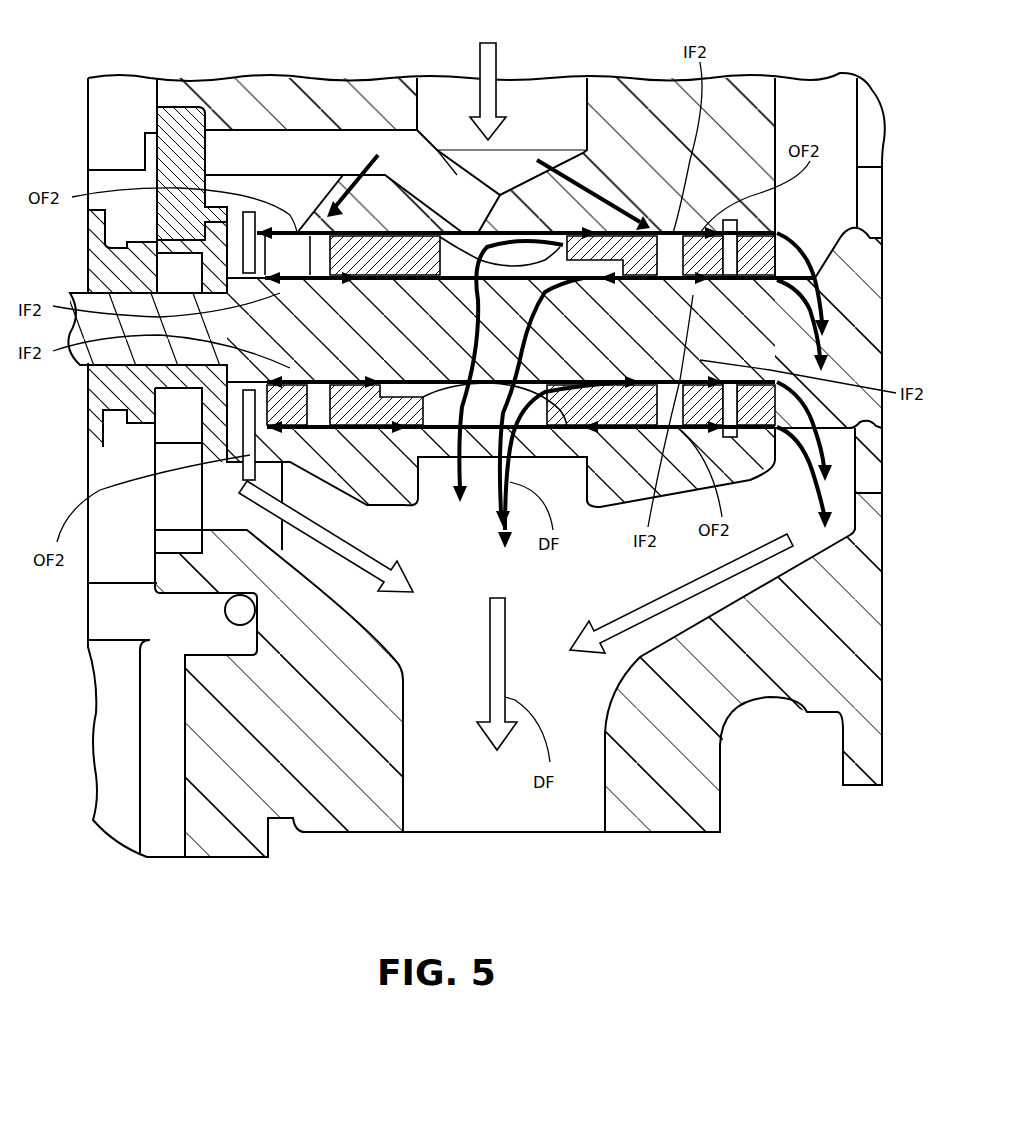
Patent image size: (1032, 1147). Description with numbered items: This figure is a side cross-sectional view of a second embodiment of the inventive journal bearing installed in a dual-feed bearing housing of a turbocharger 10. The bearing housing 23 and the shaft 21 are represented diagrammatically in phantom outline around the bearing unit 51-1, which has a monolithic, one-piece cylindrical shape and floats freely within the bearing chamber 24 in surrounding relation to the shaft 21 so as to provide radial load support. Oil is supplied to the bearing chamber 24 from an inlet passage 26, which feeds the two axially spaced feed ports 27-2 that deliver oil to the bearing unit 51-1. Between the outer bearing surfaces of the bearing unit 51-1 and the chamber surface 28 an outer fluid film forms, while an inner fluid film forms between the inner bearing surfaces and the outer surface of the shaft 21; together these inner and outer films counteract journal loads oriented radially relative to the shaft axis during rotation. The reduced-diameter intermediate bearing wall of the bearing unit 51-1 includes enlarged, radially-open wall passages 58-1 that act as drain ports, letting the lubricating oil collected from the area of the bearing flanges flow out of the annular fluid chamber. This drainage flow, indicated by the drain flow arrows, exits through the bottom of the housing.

The turbocharger 10 is at (188, 898).
The shaft 21 is at (95, 360).
The bearing housing 23 is at (620, 158).
The bearing chamber 24 is at (470, 233).
The inlet passage 26 is at (520, 97).
The feed ports 27-2 is at (310, 205).
The chamber surface 28 is at (538, 95).
The bearing unit 51-1 is at (712, 232).
The wall passages 58-1 is at (462, 228).